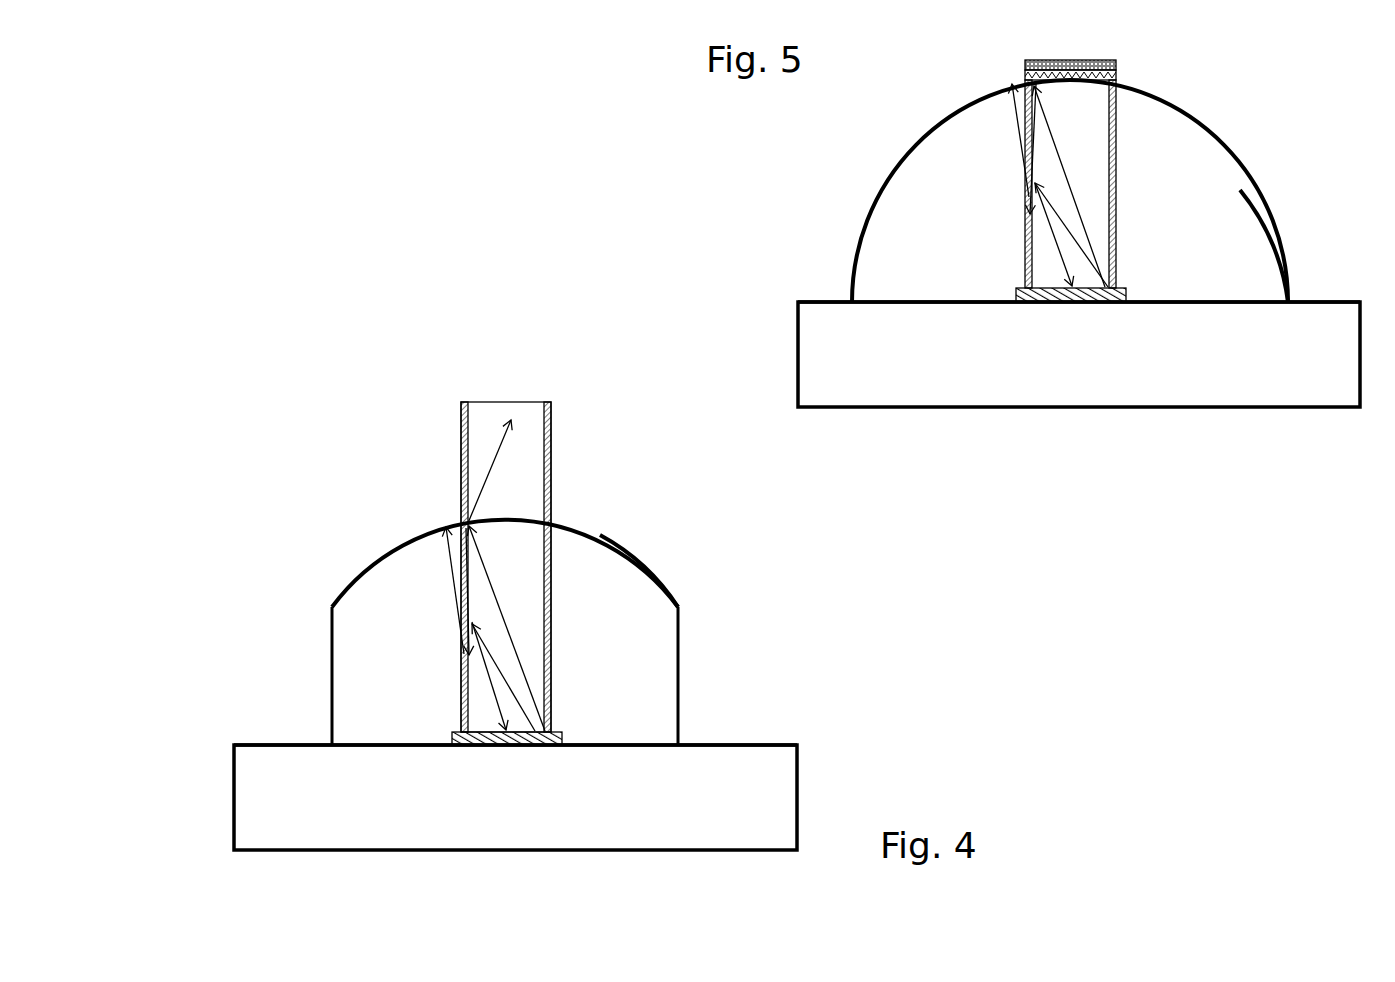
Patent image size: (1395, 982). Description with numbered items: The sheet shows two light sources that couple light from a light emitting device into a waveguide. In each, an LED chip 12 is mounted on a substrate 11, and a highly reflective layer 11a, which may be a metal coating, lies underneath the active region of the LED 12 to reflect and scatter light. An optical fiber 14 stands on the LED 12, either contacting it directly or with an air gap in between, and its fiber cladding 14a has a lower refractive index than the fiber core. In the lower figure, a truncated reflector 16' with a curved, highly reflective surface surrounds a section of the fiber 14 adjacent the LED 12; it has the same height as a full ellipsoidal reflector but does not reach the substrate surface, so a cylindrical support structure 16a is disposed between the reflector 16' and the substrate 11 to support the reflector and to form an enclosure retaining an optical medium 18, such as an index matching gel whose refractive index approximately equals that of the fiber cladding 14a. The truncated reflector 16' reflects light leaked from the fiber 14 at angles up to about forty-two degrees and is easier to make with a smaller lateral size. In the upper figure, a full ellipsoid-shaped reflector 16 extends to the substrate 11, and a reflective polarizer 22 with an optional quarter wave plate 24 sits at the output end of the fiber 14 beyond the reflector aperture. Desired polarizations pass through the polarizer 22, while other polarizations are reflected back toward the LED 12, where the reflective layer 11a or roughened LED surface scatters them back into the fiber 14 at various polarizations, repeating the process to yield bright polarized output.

In FIG. 5, the substrate 11 is at (830, 322).
In FIG. 4, the substrate 11 is at (780, 797).
In FIG. 5, the highly reflective layer 11a is at (1078, 304).
In FIG. 4, the highly reflective layer 11a is at (517, 748).
In FIG. 5, the LED chip 12 is at (1118, 288).
In FIG. 4, the LED chip 12 is at (553, 733).
In FIG. 5, the optical fiber 14 is at (1080, 153).
In FIG. 4, the optical fiber 14 is at (483, 425).
In FIG. 4, the fiber cladding 14a is at (461, 458).
In FIG. 5, the reflector 16 is at (1064, 187).
In FIG. 4, the truncated reflector 16' is at (466, 563).
In FIG. 4, the support structure 16a is at (333, 671).
In FIG. 5, the optical medium 18 is at (1267, 258).
In FIG. 4, the optical medium 18 is at (647, 623).
In FIG. 5, the reflective polarizer 22 is at (1116, 62).
In FIG. 5, the quarter wave plate 24 is at (1116, 75).